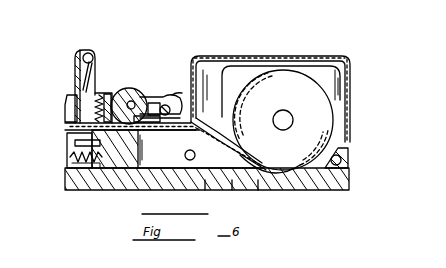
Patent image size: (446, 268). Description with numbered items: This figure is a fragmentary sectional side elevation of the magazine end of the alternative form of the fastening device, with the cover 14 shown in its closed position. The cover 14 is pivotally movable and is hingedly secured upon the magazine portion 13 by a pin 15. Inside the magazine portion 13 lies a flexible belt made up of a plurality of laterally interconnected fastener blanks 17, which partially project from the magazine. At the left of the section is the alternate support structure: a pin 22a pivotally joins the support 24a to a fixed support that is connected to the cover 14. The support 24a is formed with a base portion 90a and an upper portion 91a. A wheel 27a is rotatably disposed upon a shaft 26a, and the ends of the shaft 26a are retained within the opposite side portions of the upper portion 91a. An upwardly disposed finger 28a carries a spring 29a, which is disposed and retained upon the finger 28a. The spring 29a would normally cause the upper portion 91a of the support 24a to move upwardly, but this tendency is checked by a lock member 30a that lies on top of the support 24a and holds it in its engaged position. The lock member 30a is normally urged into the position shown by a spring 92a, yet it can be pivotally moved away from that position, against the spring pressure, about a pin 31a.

The magazine portion 13 is at (330, 182).
The cover 14 is at (352, 64).
The pin 15 is at (341, 160).
The fastener blanks 17 is at (260, 190).
The pin 22a is at (166, 104).
The support 24a is at (158, 134).
The shaft 26a is at (141, 96).
The wheel 27a is at (130, 89).
The finger 28a is at (102, 97).
The spring 29a is at (106, 108).
The lock member 30a is at (99, 94).
The pin 31a is at (87, 52).
The base portion 90a is at (77, 140).
The upper portion 91a is at (177, 95).
The spring 92a is at (78, 68).